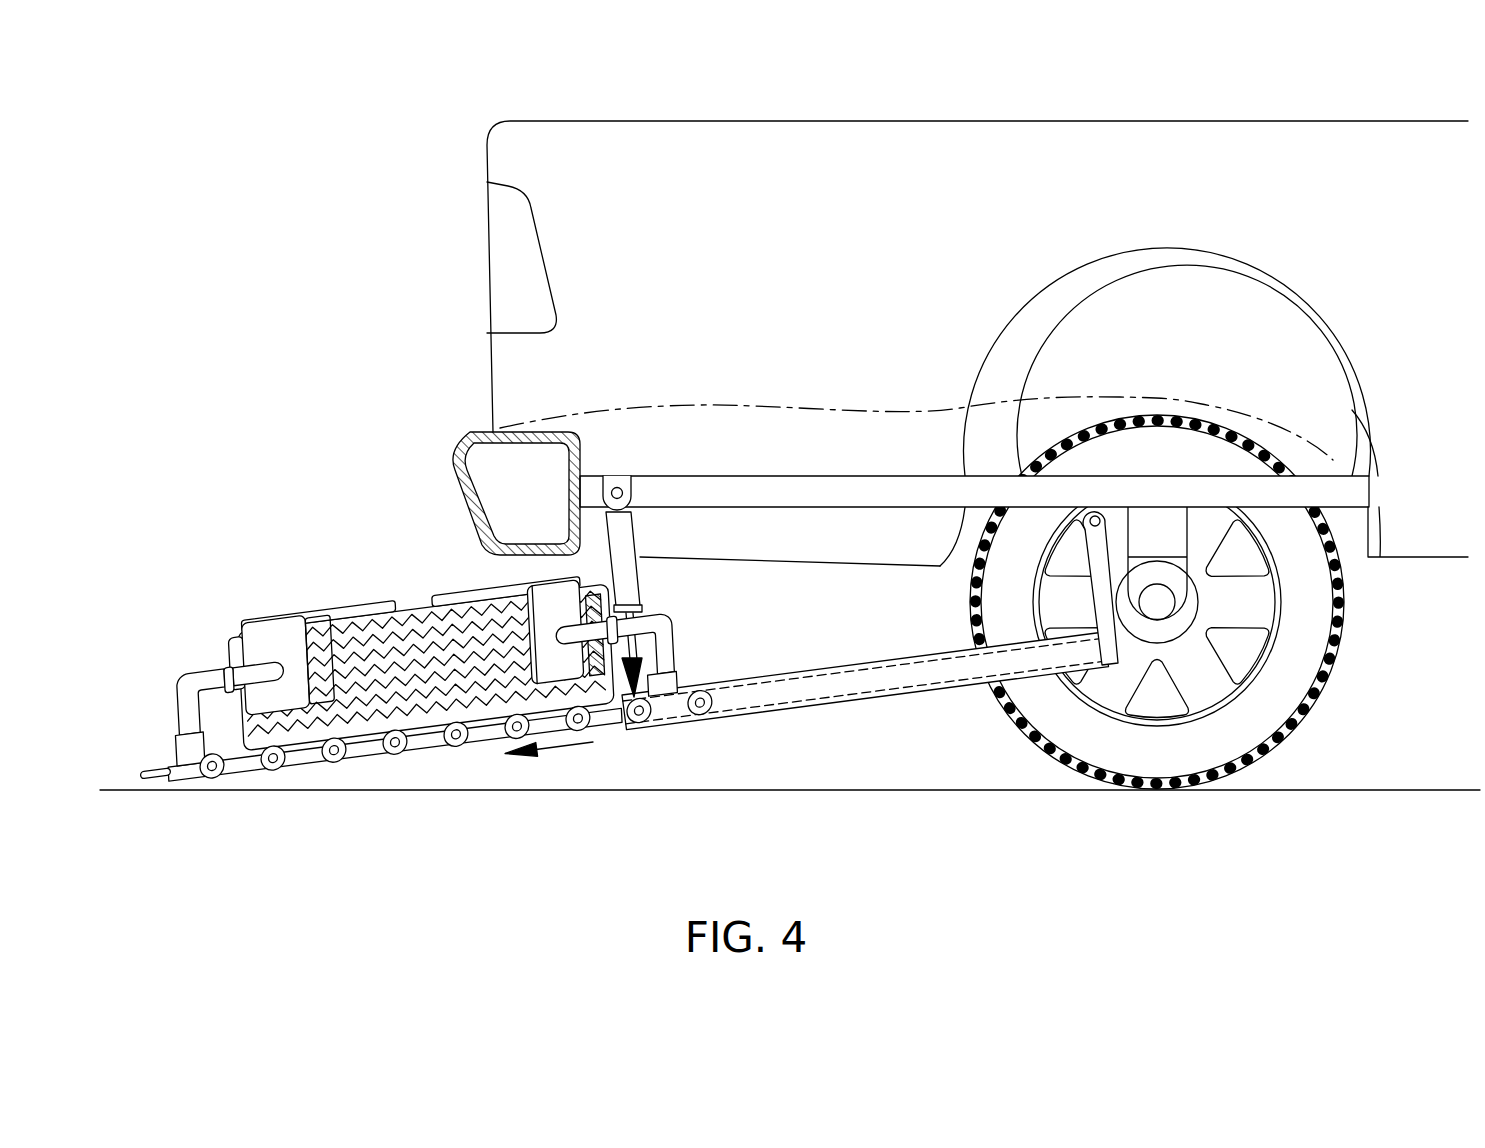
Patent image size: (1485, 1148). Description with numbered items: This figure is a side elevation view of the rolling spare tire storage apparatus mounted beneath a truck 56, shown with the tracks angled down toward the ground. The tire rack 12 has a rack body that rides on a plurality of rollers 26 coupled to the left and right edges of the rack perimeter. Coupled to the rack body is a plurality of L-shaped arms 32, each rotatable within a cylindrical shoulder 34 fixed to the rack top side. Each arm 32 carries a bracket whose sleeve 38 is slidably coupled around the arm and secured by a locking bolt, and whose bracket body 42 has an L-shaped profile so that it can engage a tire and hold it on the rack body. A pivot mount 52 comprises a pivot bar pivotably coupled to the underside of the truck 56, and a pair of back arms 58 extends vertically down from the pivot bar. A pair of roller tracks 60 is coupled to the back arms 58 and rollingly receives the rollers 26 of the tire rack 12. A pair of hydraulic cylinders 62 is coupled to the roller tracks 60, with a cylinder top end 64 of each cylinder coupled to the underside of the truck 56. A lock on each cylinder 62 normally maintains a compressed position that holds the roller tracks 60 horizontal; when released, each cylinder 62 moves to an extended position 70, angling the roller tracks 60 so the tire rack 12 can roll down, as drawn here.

The tire rack 12 is at (433, 748).
The rollers 26 is at (337, 763).
The arm 32 is at (200, 673).
The cylindrical shoulder 34 is at (188, 750).
The sleeve 38 is at (262, 673).
The bracket body 42 is at (304, 650).
The pivot mount 52 is at (887, 699).
The truck 56 is at (977, 152).
The back arms 58 is at (1103, 588).
The roller tracks 60 is at (800, 692).
The hydraulic cylinder 62 is at (615, 550).
The cylinder top end 64 is at (614, 488).
The extended position 70 is at (636, 576).